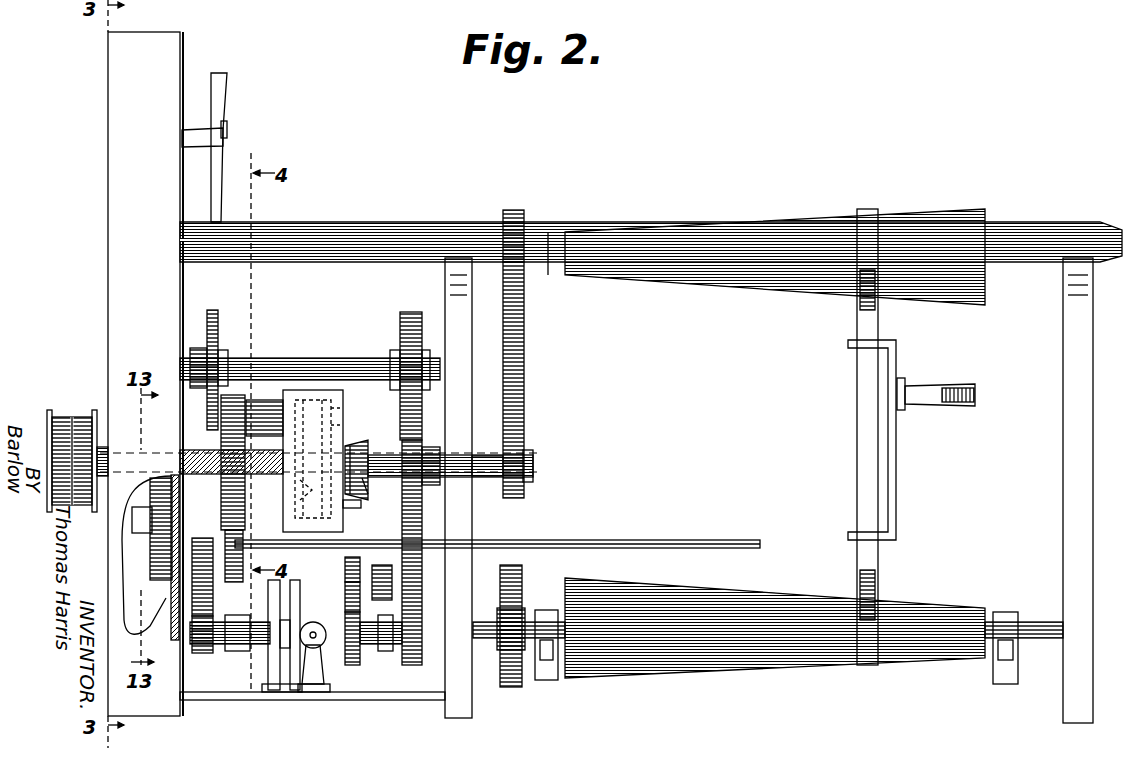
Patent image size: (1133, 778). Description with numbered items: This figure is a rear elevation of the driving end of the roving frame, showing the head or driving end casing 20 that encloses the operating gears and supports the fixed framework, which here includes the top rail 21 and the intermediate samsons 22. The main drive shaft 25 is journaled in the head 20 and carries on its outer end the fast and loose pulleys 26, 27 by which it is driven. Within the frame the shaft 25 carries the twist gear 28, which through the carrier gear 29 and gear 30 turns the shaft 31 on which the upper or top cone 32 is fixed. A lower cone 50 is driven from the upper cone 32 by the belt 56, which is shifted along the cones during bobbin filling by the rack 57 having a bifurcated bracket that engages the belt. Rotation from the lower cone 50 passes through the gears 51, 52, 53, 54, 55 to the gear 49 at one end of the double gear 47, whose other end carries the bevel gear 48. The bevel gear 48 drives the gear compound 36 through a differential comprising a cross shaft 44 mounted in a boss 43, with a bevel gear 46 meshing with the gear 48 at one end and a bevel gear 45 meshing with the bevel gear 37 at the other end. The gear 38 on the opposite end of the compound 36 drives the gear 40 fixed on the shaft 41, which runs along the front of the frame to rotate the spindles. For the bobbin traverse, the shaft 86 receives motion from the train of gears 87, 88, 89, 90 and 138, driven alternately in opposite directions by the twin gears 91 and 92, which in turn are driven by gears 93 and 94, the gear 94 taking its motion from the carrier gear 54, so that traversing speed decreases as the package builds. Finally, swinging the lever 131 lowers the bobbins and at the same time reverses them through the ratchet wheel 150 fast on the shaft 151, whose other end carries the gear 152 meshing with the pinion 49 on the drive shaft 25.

The head or driving end casing 20 is at (132, 82).
The lever 131 is at (238, 95).
The top rail 21 is at (352, 222).
The intermediate samsons 22 is at (445, 275).
The main drive shaft 25 is at (492, 510).
The fast pulley 26 is at (81, 417).
The loose pulley 27 is at (58, 420).
The twist gear 28 is at (530, 480).
The carrier gear 29 is at (524, 338).
The gear 30 is at (524, 212).
The shaft 31 is at (550, 265).
The upper or top cone 32 is at (726, 285).
The gear compound 36 is at (252, 412).
The bevel gear 37 is at (303, 390).
The gear 38 is at (221, 440).
The gear 40 is at (238, 583).
The shaft 41 is at (693, 540).
The boss 43 is at (368, 436).
The cross shaft 44 is at (335, 432).
The bevel gear 45 is at (335, 410).
The bevel gear 46 is at (350, 505).
The double gear 47 is at (362, 486).
The bevel gear 48 is at (368, 455).
The gear (pinion) 49 is at (430, 447).
The lower cone 50 is at (800, 603).
The gear 51 is at (523, 612).
The gear 52 is at (512, 687).
The gear 53 is at (412, 665).
The carrier gear 54 is at (360, 563).
The gear 55 is at (402, 520).
The belt 56 is at (857, 435).
The rack 57 is at (936, 398).
The shaft 86 is at (155, 518).
The gear 87 is at (203, 653).
The gear 88 is at (203, 538).
The gear 89 is at (141, 567).
The gear 90 is at (161, 478).
The twin gear 91 is at (290, 692).
The twin gear 92 is at (320, 692).
The gear 93 is at (356, 665).
The gear 94 is at (345, 572).
The gear 138 is at (160, 540).
The ratchet wheel 150 is at (220, 340).
The shaft 151 is at (336, 358).
The gear 152 is at (410, 312).